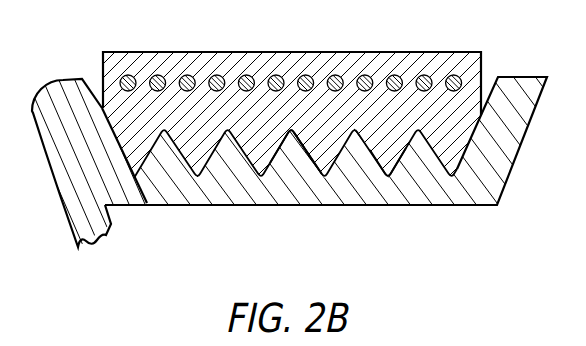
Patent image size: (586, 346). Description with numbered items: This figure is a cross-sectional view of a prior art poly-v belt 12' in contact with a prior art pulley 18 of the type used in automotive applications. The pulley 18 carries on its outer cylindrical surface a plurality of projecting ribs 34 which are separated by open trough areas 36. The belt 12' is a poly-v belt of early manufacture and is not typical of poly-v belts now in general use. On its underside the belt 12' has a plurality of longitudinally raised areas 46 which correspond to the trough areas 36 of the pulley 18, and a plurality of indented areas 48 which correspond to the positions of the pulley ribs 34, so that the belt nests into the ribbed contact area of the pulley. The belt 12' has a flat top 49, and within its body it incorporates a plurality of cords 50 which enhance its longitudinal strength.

The flat top 49 is at (163, 52).
The cords 50 is at (122, 80).
The poly-v belt 12' is at (293, 114).
The projecting ribs 34 is at (418, 128).
The trough areas 36 is at (388, 177).
The longitudinally raised areas 46 is at (325, 152).
The indented areas 48 is at (288, 132).
The pulley 18 is at (115, 222).